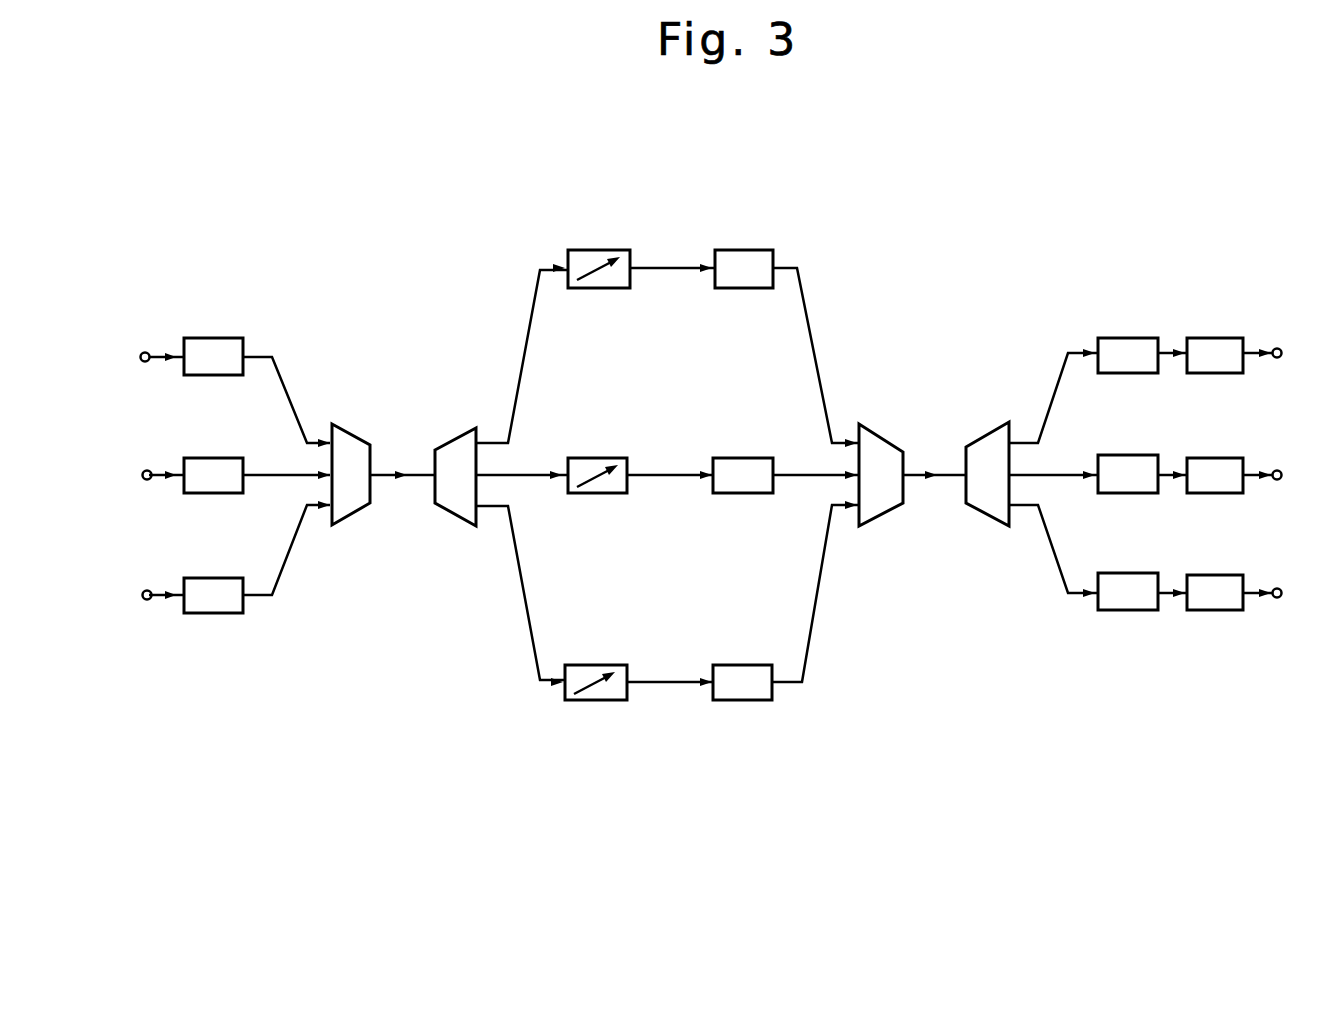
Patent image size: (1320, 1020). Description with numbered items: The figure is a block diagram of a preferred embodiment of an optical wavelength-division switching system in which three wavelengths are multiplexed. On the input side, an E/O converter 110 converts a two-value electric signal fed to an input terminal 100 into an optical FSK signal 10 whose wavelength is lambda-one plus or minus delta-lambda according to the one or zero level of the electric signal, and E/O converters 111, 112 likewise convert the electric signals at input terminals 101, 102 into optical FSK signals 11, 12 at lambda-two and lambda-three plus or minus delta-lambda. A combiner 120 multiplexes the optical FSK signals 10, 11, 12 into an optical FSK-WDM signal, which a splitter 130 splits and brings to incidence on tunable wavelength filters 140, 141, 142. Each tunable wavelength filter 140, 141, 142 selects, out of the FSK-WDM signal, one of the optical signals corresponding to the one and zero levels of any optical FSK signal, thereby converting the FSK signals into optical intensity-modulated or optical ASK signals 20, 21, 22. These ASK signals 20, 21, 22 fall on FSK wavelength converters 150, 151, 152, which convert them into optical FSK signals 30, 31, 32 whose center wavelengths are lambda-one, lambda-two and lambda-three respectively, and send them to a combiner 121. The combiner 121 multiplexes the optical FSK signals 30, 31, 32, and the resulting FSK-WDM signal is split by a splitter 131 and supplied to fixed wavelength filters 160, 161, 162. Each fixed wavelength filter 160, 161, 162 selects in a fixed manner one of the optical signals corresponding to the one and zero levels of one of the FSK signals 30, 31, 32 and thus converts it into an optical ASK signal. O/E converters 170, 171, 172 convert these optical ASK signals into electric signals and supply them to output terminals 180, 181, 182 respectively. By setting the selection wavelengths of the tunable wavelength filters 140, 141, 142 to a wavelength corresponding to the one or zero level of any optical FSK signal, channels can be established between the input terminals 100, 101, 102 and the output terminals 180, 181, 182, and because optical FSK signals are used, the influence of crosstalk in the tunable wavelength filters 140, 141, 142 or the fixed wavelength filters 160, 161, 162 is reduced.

The input terminal 100 is at (144, 352).
The input terminal 101 is at (144, 480).
The input terminal 102 is at (147, 602).
The E/O converter 110 is at (212, 338).
The E/O converter 111 is at (205, 493).
The E/O converter 112 is at (200, 578).
The optical FSK signal 10 is at (262, 357).
The optical FSK signal 11 is at (253, 458).
The optical FSK signal 12 is at (262, 597).
The combiner 120 is at (343, 525).
The splitter 130 is at (454, 428).
The tunable wavelength filter 140 is at (588, 250).
The tunable wavelength filter 141 is at (597, 458).
The tunable wavelength filter 142 is at (597, 665).
The optical ASK signal 20 is at (664, 270).
The optical ASK signal 21 is at (645, 478).
The optical ASK signal 22 is at (653, 684).
The FSK wavelength converter 150 is at (742, 250).
The FSK wavelength converter 151 is at (737, 458).
The FSK wavelength converter 152 is at (732, 665).
The optical FSK signal 30 is at (799, 271).
The optical FSK signal 31 is at (790, 478).
The optical FSK signal 32 is at (802, 684).
The combiner 121 is at (870, 526).
The splitter 131 is at (1000, 527).
The fixed wavelength filter 160 is at (1121, 338).
The fixed wavelength filter 161 is at (1122, 455).
The fixed wavelength filter 162 is at (1125, 573).
The O/E converter 170 is at (1213, 338).
The O/E converter 171 is at (1209, 458).
The O/E converter 172 is at (1209, 575).
The output terminal 180 is at (1277, 349).
The output terminal 181 is at (1277, 471).
The output terminal 182 is at (1277, 589).